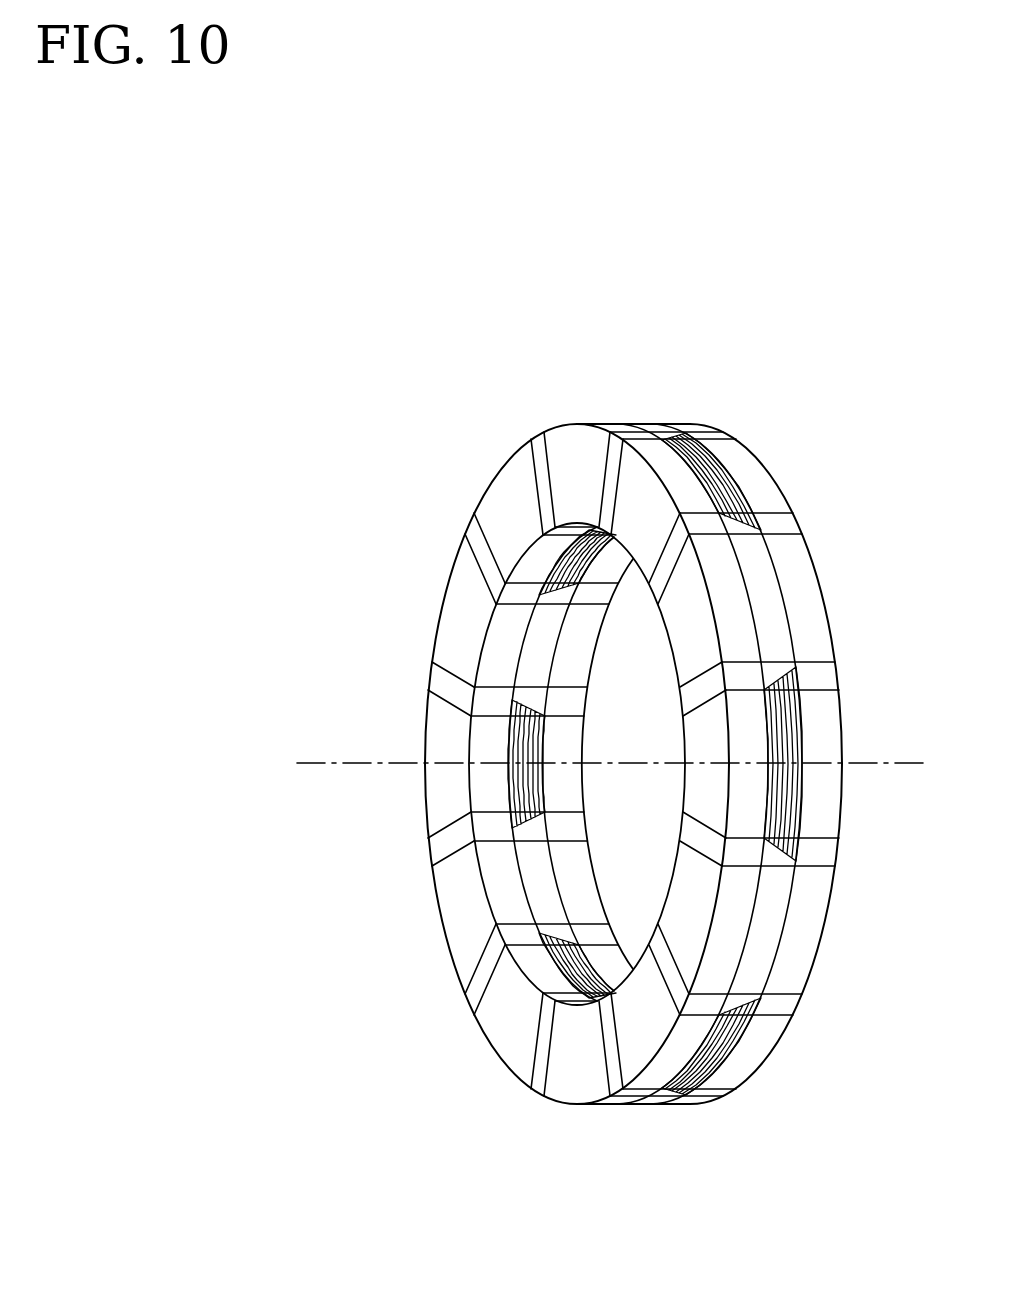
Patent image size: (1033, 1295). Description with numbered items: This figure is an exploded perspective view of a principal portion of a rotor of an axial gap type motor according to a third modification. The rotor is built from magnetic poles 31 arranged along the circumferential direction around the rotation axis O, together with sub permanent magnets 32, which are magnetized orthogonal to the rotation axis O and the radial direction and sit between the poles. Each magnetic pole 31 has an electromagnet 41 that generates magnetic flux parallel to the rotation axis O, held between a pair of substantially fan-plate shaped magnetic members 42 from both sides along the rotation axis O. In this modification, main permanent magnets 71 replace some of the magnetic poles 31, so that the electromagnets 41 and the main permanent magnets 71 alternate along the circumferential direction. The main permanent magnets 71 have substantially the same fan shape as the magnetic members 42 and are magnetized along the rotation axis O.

The magnetic pole 31 is at (778, 460).
The sub permanent magnet 32 is at (606, 468).
The electromagnet 41 is at (692, 449).
The magnetic member 42 is at (653, 447).
The main permanent magnet 71 is at (766, 583).
The rotation axis O is at (326, 768).